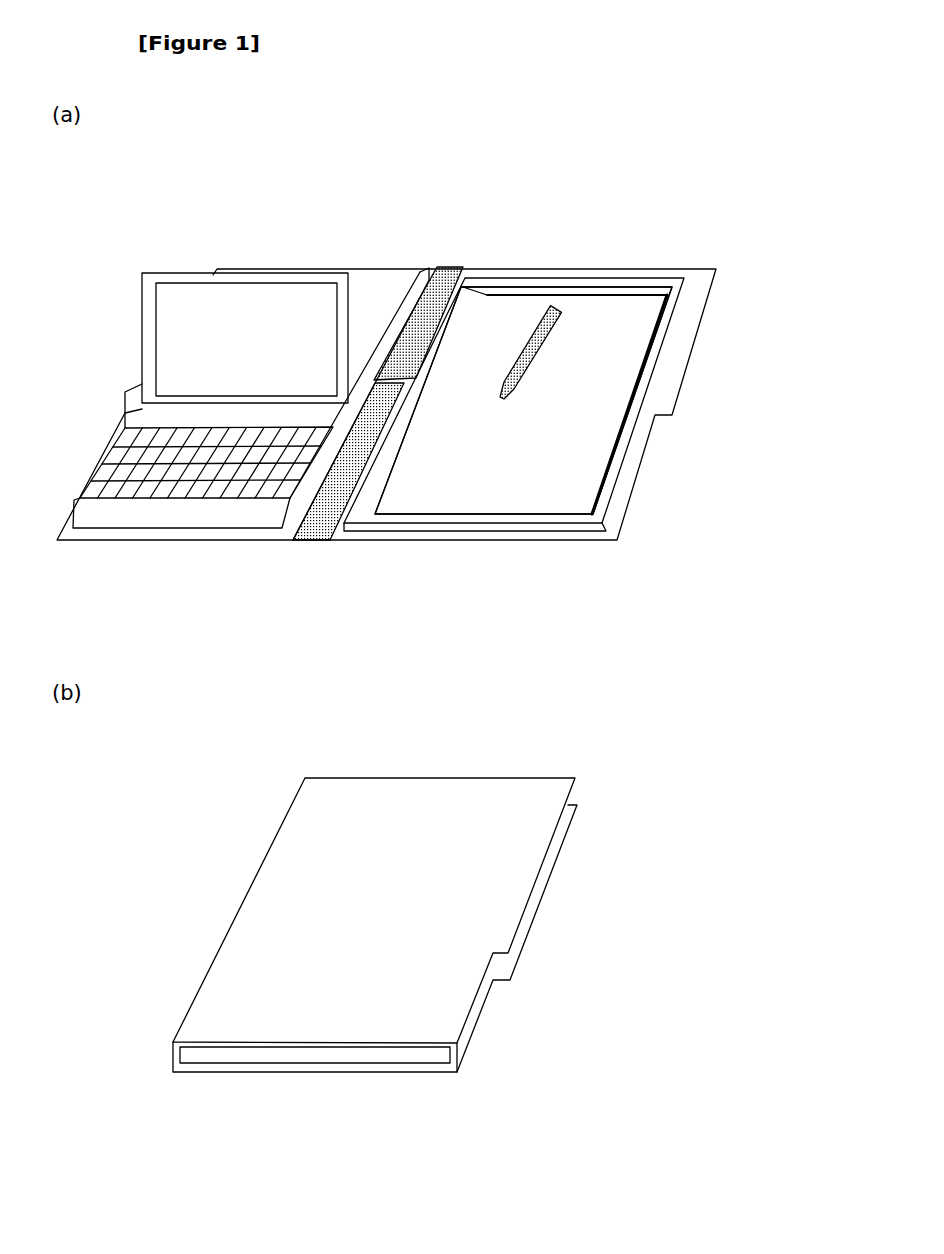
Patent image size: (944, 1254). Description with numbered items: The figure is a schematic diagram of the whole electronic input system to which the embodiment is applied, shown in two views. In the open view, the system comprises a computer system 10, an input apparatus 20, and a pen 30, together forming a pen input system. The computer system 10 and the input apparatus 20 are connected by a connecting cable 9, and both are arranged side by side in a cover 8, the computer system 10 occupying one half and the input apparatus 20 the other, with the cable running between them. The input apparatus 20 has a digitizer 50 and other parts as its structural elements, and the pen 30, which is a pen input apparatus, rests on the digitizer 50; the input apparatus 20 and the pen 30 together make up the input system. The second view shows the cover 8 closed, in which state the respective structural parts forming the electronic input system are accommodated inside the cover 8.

The cover 8 is at (505, 541).
The connecting cable 9 is at (452, 268).
The computer system 10 is at (203, 256).
The input apparatus 20 is at (687, 221).
The pen 30 is at (558, 306).
The digitizer 50 is at (565, 462).